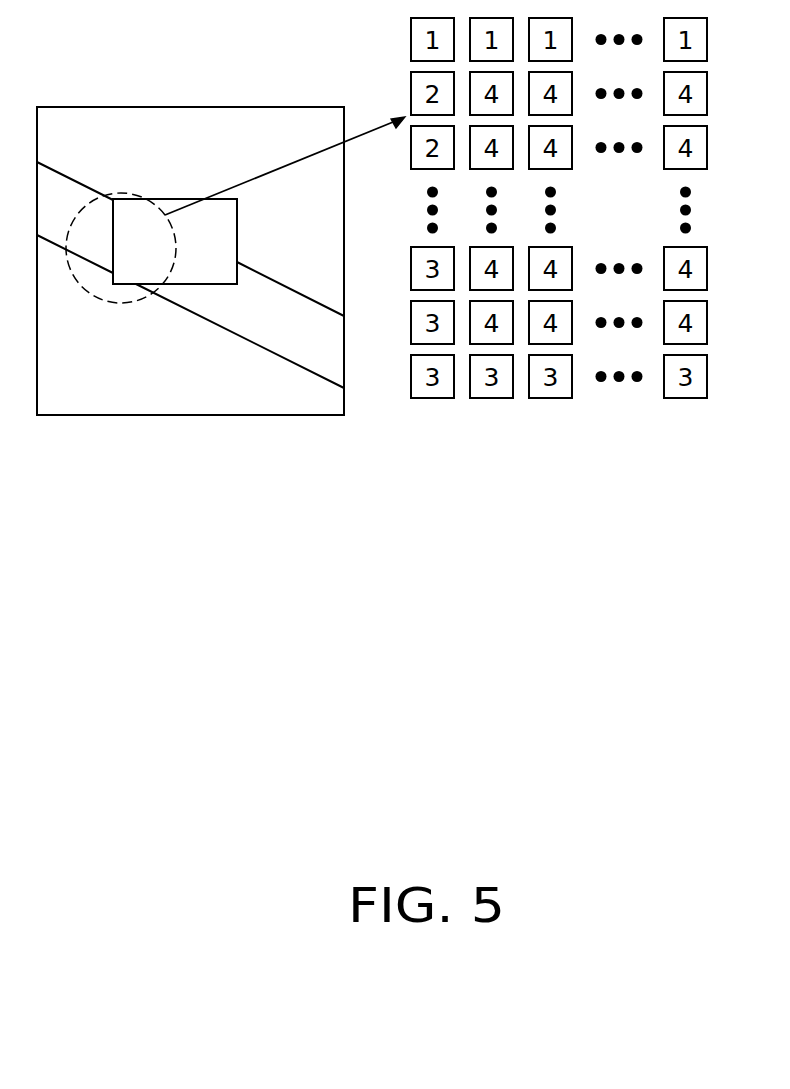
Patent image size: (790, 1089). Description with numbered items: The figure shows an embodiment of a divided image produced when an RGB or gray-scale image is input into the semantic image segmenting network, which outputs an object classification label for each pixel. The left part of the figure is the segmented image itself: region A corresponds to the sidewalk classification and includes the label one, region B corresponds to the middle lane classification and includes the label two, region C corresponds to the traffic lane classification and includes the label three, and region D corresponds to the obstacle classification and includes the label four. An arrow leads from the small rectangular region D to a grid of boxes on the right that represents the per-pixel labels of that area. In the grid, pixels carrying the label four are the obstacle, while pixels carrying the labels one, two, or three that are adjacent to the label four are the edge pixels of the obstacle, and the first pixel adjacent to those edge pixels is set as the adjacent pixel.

The region A is at (169, 137).
The region B is at (55, 195).
The region C is at (89, 389).
The region D is at (235, 210).